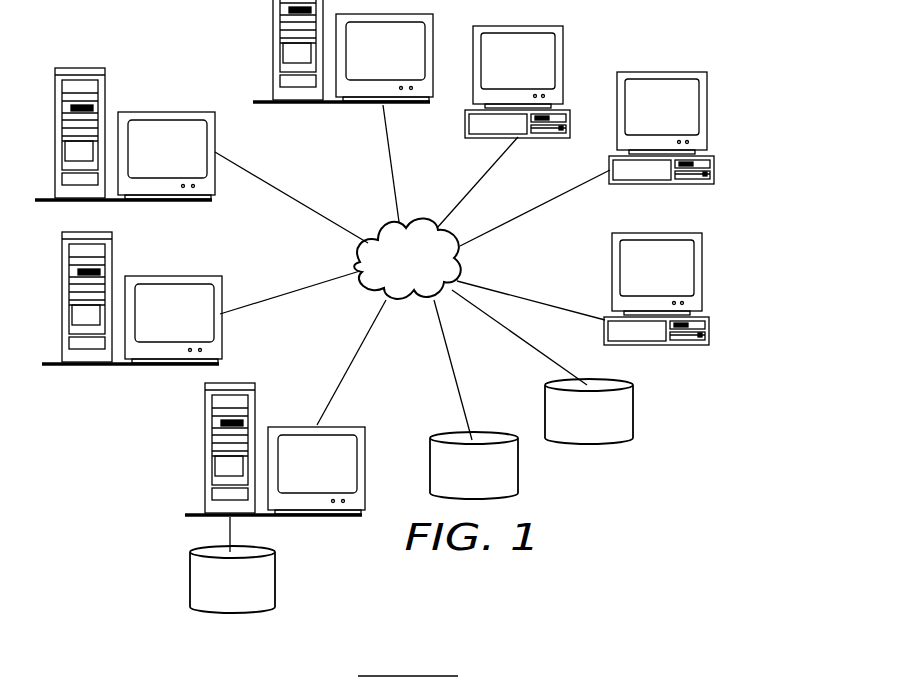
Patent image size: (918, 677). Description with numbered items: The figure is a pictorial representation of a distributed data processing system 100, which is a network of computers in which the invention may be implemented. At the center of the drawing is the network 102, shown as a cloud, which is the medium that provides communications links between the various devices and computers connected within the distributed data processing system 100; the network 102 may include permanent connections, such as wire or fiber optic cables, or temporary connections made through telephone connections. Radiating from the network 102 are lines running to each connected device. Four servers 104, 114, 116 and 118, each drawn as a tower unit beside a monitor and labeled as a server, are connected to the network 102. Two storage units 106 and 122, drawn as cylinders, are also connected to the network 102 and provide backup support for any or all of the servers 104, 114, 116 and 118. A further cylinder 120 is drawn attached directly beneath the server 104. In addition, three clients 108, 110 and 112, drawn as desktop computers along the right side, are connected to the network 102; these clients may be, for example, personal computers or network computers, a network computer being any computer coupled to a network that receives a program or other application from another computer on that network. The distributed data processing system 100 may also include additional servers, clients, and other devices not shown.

The distributed data processing system 100 is at (772, 90).
The network 102 is at (427, 272).
The server 104 is at (336, 482).
The storage unit 106 is at (607, 430).
The client 108 is at (536, 75).
The client 110 is at (679, 125).
The client 112 is at (674, 283).
The server 114 is at (191, 326).
The server 116 is at (184, 163).
The server 118 is at (401, 69).
The storage unit 120 is at (251, 597).
The storage unit 122 is at (491, 482).